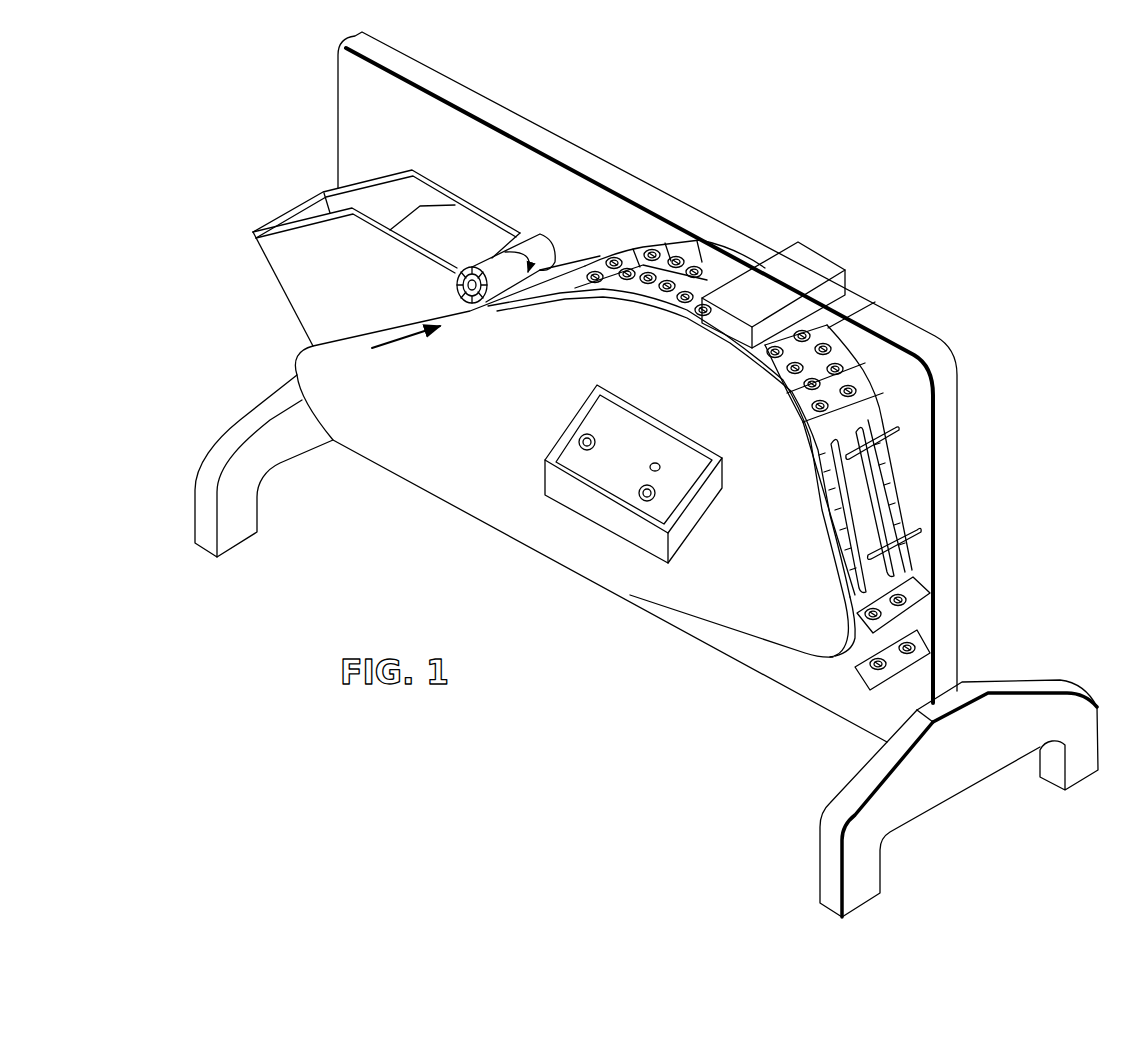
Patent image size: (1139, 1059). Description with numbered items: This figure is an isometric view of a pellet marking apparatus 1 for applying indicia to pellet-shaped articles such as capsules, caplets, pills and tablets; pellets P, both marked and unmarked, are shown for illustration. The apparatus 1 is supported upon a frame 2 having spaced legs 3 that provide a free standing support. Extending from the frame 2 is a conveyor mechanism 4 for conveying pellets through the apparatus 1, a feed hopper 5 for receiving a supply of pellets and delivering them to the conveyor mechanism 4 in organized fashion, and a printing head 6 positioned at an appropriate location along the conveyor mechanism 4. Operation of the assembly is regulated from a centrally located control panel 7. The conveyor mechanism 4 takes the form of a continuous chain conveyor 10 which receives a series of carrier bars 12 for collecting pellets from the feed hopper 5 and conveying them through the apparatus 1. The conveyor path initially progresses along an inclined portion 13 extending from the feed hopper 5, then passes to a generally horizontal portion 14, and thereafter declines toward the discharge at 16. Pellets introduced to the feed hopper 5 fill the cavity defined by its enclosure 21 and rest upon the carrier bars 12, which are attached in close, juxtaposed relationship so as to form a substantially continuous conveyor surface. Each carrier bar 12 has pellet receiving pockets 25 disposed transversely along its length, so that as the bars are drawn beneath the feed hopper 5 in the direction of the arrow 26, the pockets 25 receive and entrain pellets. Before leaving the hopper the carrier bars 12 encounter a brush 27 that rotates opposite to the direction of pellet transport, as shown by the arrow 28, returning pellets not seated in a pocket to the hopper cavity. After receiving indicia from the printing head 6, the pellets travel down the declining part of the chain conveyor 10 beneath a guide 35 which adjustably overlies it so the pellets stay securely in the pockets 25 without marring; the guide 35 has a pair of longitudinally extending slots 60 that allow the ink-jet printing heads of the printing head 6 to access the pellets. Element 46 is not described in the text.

The pellet marking apparatus 1 is at (928, 284).
The frame 2 is at (945, 468).
The legs 3 is at (245, 528).
The conveyor mechanism 4 is at (415, 455).
The feed hopper 5 is at (373, 255).
The printing head 6 is at (815, 248).
The control panel 7 is at (548, 432).
The chain conveyor 10 is at (747, 454).
The carrier bars 12 is at (692, 252).
The inclined portion 13 is at (602, 250).
The horizontal portion 14 is at (848, 302).
The discharge 16 is at (922, 650).
The enclosure 21 is at (317, 222).
The pellet receiving pockets 25 is at (608, 292).
The arrow 26 is at (418, 332).
The brush 27 is at (545, 280).
The arrow 28 is at (517, 300).
The guide 35 is at (820, 498).
The track end 46 is at (858, 632).
The slots 60 is at (880, 488).
The pellets P is at (655, 292).